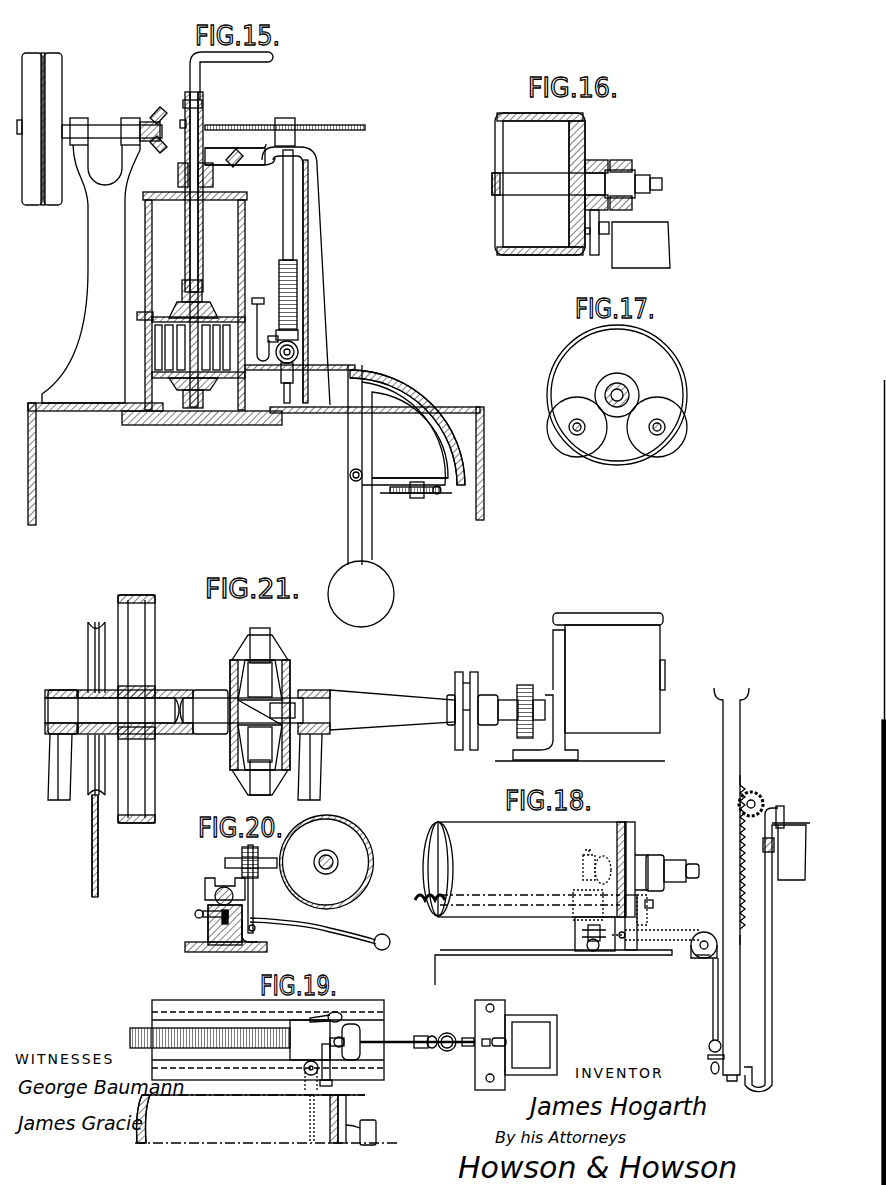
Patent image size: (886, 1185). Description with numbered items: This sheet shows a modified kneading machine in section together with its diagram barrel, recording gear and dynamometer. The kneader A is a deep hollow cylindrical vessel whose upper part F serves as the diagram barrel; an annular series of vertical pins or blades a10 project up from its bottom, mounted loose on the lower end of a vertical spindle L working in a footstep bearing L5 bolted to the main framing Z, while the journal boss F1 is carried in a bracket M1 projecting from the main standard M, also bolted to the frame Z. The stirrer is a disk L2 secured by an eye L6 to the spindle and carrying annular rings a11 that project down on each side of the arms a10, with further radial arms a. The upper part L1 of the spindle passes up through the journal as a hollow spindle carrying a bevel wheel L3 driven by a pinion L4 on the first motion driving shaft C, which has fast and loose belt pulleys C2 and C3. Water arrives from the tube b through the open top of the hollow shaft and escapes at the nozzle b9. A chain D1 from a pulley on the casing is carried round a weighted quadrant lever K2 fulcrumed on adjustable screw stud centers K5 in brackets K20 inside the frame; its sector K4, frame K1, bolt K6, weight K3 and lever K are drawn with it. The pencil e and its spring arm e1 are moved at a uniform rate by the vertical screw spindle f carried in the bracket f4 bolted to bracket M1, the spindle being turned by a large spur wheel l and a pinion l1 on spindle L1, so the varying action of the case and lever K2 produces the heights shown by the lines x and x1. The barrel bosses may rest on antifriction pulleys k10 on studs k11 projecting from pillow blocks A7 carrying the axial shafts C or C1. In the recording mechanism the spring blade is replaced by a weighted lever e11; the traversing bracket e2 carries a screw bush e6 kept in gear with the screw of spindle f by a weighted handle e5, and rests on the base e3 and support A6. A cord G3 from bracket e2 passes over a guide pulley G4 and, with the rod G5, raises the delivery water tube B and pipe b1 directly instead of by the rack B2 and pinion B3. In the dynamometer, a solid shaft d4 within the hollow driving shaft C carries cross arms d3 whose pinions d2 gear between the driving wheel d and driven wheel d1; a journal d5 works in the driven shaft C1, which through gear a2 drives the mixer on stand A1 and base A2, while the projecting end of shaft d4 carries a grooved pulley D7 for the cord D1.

In FIG. 15, the loose belt pulley C3 is at (29, 129).
In FIG. 15, the fast belt pulley C2 is at (51, 129).
In FIG. 21, the fast belt pulley C2 is at (150, 630).
In FIG. 15, the first motion driving shaft C is at (112, 133).
In FIG. 21, the first motion driving shaft C is at (182, 698).
In FIG. 15, the pinion L4 is at (162, 110).
In FIG. 15, the main standard M is at (91, 274).
In FIG. 15, the main framing Z is at (262, 464).
In FIG. 15, the diagram barrel F is at (198, 301).
In FIG. 16, the diagram barrel F is at (540, 184).
In FIG. 17, the diagram barrel F is at (617, 395).
In FIG. 20, the diagram barrel F is at (326, 862).
In FIG. 18, the diagram barrel F is at (643, 836).
In FIG. 19, the diagram barrel F is at (353, 1106).
In FIG. 15, the hollow spindle L1 is at (207, 220).
In FIG. 15, the pinion l1 is at (203, 100).
In FIG. 15, the water tube b is at (251, 63).
In FIG. 19, the water tube b is at (484, 1052).
In FIG. 15, the large spur wheel l is at (342, 133).
In FIG. 15, the bevel wheel L3 is at (242, 152).
In FIG. 15, the journal boss F1 is at (202, 171).
In FIG. 16, the journal boss F1 is at (592, 161).
In FIG. 18, the journal boss F1 is at (648, 858).
In FIG. 15, the bracket M1 is at (248, 150).
In FIG. 15, the bracket f4 is at (296, 276).
In FIG. 18, the bracket f4 is at (430, 909).
In FIG. 15, the screw spindle f is at (284, 276).
In FIG. 20, the screw spindle f is at (213, 893).
In FIG. 18, the screw spindle f is at (658, 905).
In FIG. 19, the screw spindle f is at (220, 1046).
In FIG. 15, the pencil e is at (257, 300).
In FIG. 20, the pencil e is at (262, 868).
In FIG. 19, the pencil e is at (325, 1088).
In FIG. 15, the spring arm e1 is at (270, 328).
In FIG. 19, the spring arm e1 is at (306, 1075).
In FIG. 15, the eye L6 is at (203, 283).
In FIG. 15, the vertical spindle L is at (207, 307).
In FIG. 15, the disk L2 is at (165, 316).
In FIG. 15, the vane a is at (170, 372).
In FIG. 21, the vane a is at (503, 724).
In FIG. 15, the vertical pins or blades a10 is at (200, 350).
In FIG. 15, the annular rings a11 is at (157, 368).
In FIG. 15, the kneader A is at (199, 344).
In FIG. 21, the kneader A is at (609, 673).
In FIG. 18, the kneader A is at (791, 851).
In FIG. 19, the kneader A is at (524, 1048).
In FIG. 15, the footstep bearing L5 is at (205, 400).
In FIG. 15, the chain or cord D1 is at (312, 368).
In FIG. 21, the chain or cord D1 is at (99, 845).
In FIG. 15, the sector rack K4 is at (368, 370).
In FIG. 15, the quadrant sector weighted lever K2 is at (350, 402).
In FIG. 15, the brackets K20 is at (406, 435).
In FIG. 15, the frame K1 is at (452, 452).
In FIG. 15, the adjustable screw stud centers K5 is at (350, 477).
In FIG. 15, the bolt K6 is at (424, 494).
In FIG. 15, the weight K3 is at (361, 593).
In FIG. 15, the lever K is at (355, 490).
In FIG. 15, the hole or nozzle b9 is at (189, 254).
In FIG. 18, the hole or nozzle b9 is at (783, 820).
In FIG. 19, the hole or nozzle b9 is at (501, 1039).
In FIG. 16, the driven shaft C1 is at (577, 184).
In FIG. 17, the driven shaft C1 is at (617, 395).
In FIG. 21, the driven shaft C1 is at (392, 710).
In FIG. 20, the driven shaft C1 is at (338, 863).
In FIG. 18, the driven shaft C1 is at (700, 870).
In FIG. 16, the studs k11 is at (612, 226).
In FIG. 17, the studs k11 is at (692, 420).
In FIG. 16, the pillow blocks A7 is at (641, 245).
In FIG. 18, the pillow blocks A7 is at (655, 873).
In FIG. 16, the antifriction pulleys k10 is at (594, 256).
In FIG. 17, the antifriction pulleys k10 is at (617, 427).
In FIG. 21, the grooved pulley D7 is at (88, 658).
In FIG. 21, the solid shaft d4 is at (187, 745).
In FIG. 21, the driving wheel d is at (234, 662).
In FIG. 21, the bevel or spur pinions d2 is at (272, 648).
In FIG. 21, the driven wheel d1 is at (290, 672).
In FIG. 21, the cross arms d3 is at (260, 710).
In FIG. 21, the journal d5 is at (290, 709).
In FIG. 21, the gear a2 is at (523, 688).
In FIG. 21, the stand A1 is at (545, 695).
In FIG. 19, the stand A1 is at (507, 1080).
In FIG. 21, the base A2 is at (580, 767).
In FIG. 20, the weighted handle e5 is at (195, 914).
In FIG. 19, the weighted handle e5 is at (334, 1012).
In FIG. 20, the screw bush e6 is at (210, 924).
In FIG. 20, the base plate e3 is at (234, 947).
In FIG. 18, the base plate e3 is at (572, 959).
In FIG. 19, the base plate e3 is at (268, 1069).
In FIG. 20, the traversing bracket e2 is at (225, 935).
In FIG. 18, the traversing bracket e2 is at (596, 934).
In FIG. 19, the traversing bracket e2 is at (268, 1037).
In FIG. 20, the weighted lever e11 is at (255, 914).
In FIG. 18, the weighted lever e11 is at (592, 897).
In FIG. 18, the support A6 is at (656, 924).
In FIG. 18, the guide pulley G4 is at (706, 933).
In FIG. 19, the guide pulley G4 is at (429, 1050).
In FIG. 18, the cord G3 is at (713, 1012).
In FIG. 18, the delivery water tube B is at (731, 884).
In FIG. 19, the delivery water tube B is at (456, 1049).
In FIG. 18, the rack B2 is at (751, 860).
In FIG. 18, the pinion B3 is at (745, 788).
In FIG. 18, the pipe b1 is at (766, 876).
In FIG. 19, the pressure lines x is at (324, 1107).
In FIG. 19, the mark x1 is at (321, 1119).
In FIG. 19, the rod G5 is at (417, 1046).